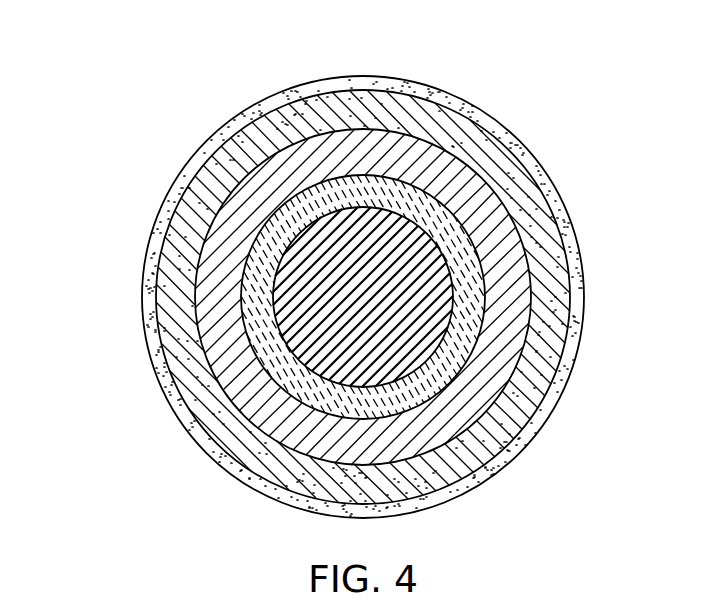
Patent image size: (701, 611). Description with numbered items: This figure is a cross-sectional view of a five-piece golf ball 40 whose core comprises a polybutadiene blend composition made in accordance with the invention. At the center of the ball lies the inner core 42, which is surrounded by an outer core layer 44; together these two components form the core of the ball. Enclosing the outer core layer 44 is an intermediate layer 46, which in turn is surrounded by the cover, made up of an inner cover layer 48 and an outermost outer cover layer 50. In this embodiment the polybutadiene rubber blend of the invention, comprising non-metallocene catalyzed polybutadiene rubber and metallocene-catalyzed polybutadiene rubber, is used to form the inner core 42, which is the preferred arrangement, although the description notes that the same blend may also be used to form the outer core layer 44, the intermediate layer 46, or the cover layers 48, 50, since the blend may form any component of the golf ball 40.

The five-piece golf ball 40 is at (500, 78).
The inner core 42 is at (303, 302).
The outer core layer 44 is at (273, 342).
The intermediate layer 46 is at (255, 387).
The inner cover layer 48 is at (535, 357).
The outer cover layer 50 is at (538, 418).